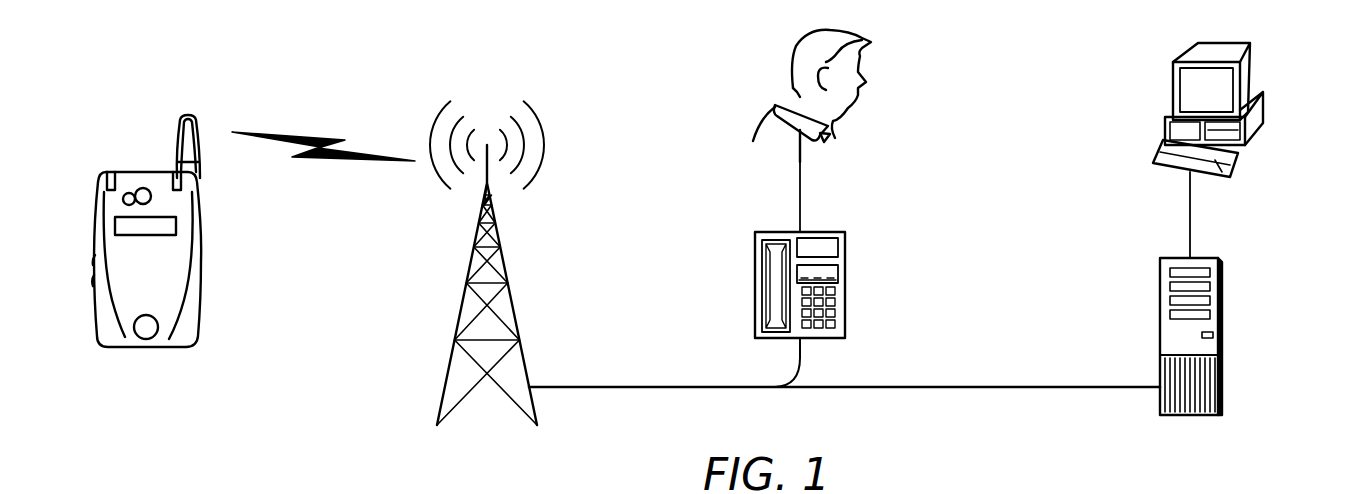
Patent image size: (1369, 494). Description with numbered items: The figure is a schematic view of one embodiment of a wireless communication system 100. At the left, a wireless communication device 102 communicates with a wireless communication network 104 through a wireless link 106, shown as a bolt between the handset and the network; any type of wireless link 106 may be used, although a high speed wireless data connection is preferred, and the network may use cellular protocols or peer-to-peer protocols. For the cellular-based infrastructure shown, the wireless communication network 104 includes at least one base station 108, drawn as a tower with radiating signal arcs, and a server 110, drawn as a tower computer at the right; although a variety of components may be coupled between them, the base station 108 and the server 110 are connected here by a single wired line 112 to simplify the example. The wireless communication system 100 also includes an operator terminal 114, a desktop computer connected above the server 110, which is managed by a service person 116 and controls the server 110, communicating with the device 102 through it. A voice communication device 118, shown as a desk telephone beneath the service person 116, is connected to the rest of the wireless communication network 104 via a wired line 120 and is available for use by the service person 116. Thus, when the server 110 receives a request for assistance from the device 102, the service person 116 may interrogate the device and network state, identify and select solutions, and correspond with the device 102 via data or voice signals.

The wireless communication system 100 is at (701, 234).
The wireless communication device 102 is at (148, 348).
The wireless communication network 104 is at (800, 389).
The wireless link 106 is at (284, 133).
The base station 108 is at (460, 305).
The server 110 is at (1222, 338).
The wired line 112 is at (643, 386).
The operator terminal 114 is at (1258, 129).
The service person 116 is at (796, 62).
The voice communication device 118 is at (755, 288).
The wired line 120 is at (803, 361).